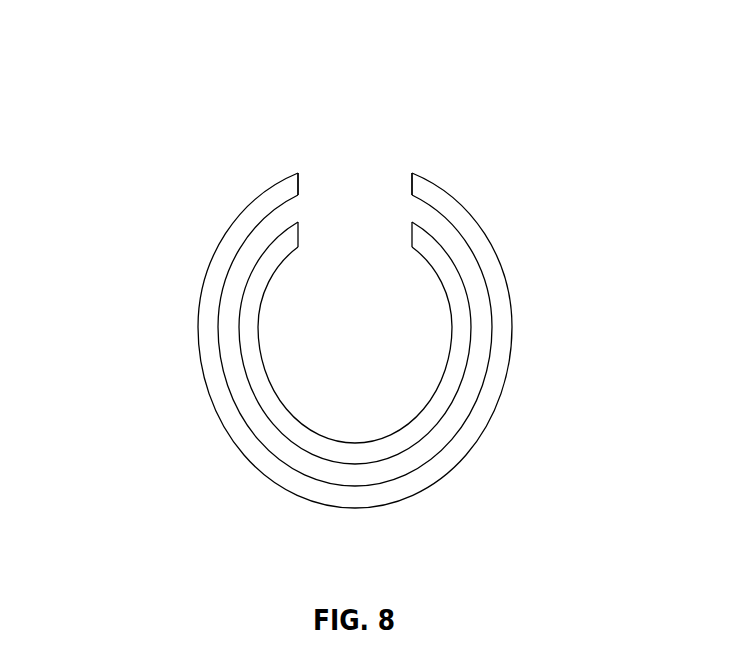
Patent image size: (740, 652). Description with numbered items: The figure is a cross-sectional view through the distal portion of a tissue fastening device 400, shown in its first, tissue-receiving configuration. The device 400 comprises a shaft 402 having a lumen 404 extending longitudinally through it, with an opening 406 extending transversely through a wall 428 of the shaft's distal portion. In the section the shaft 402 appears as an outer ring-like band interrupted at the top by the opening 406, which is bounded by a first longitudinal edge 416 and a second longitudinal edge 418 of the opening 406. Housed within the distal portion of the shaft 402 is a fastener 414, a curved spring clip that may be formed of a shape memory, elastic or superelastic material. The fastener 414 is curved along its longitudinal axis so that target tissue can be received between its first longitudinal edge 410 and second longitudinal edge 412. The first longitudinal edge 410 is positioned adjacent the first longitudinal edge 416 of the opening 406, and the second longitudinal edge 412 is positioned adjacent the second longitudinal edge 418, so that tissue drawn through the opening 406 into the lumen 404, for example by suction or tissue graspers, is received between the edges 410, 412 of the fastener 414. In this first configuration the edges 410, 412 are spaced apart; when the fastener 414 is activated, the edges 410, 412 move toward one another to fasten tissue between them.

The device 400 is at (278, 131).
The shaft 402 is at (200, 294).
The lumen 404 is at (253, 419).
The opening 406 is at (393, 177).
The first longitudinal edge 410 is at (298, 239).
The second longitudinal edge 412 is at (412, 237).
The fastener 414 is at (437, 403).
The first longitudinal edge of the opening 416 is at (298, 181).
The second longitudinal edge of the opening 418 is at (413, 185).
The wall 428 is at (480, 253).